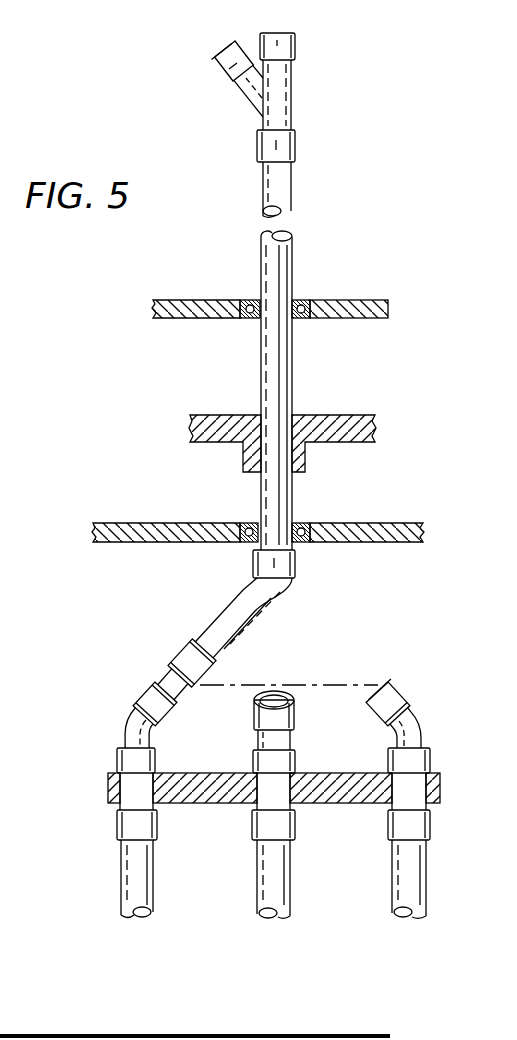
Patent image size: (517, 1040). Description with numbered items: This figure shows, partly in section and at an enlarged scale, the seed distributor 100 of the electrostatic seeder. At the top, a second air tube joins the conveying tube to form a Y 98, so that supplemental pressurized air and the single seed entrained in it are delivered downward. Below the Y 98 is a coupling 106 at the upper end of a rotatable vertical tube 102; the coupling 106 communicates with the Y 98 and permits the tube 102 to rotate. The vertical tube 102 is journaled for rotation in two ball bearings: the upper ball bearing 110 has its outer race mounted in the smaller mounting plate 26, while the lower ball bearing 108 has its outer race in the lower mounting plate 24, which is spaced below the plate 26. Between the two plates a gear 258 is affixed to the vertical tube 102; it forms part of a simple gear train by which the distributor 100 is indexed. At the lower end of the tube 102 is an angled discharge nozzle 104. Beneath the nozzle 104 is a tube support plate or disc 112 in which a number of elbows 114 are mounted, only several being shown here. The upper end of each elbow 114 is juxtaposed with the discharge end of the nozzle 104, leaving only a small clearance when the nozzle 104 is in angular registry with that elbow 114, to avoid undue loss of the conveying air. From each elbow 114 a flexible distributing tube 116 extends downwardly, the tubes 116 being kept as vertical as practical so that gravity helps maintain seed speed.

The Y 98 is at (295, 90).
The coupling 106 is at (296, 141).
The rotatable vertical tube 102 is at (292, 253).
The mounting plate 26 is at (362, 300).
The ball bearing 110 is at (300, 318).
The gear 258 is at (225, 415).
The lower mounting plate 24 is at (340, 523).
The ball bearing 108 is at (303, 543).
The seed distributor 100 is at (168, 623).
The angled discharge nozzle 104 is at (248, 620).
The elbows 114 is at (120, 733).
The tube support plate 112 is at (230, 770).
The flexible distributing tube 116 is at (135, 880).